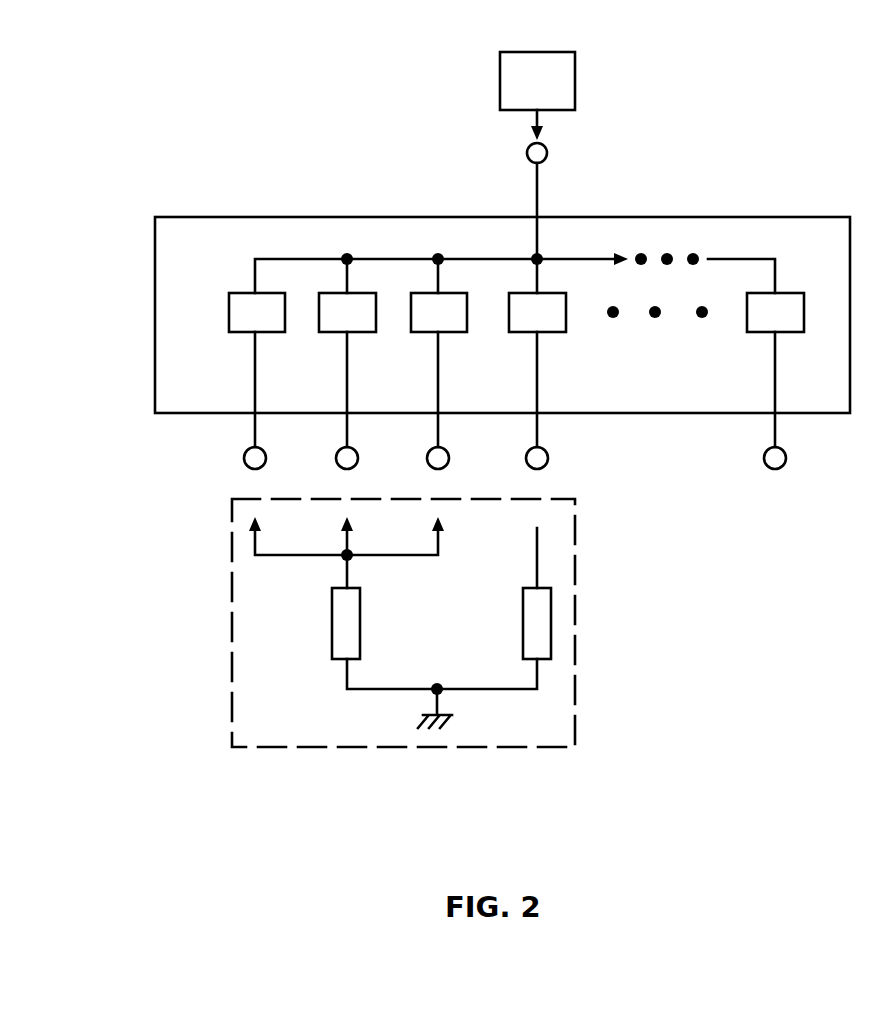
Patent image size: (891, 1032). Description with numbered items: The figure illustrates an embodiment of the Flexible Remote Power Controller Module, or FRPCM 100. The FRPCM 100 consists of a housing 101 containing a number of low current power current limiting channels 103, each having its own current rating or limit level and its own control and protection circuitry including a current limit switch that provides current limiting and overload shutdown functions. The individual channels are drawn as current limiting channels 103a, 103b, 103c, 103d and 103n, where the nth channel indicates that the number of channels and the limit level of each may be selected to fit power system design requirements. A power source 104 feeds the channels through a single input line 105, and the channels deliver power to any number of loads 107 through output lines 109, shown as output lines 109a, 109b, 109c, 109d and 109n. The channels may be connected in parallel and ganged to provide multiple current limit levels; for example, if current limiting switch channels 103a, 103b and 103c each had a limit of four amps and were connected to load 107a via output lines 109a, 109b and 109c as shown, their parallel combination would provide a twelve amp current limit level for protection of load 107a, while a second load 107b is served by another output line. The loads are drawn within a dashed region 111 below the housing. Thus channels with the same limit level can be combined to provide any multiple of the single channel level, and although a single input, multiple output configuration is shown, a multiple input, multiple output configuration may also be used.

The Flexible Remote Power Controller Module 100 is at (333, 217).
The housing 101 is at (713, 217).
The current limiting channels 103 is at (181, 323).
The current limiting switch channel 103a is at (246, 333).
The current limiting switch channel 103b is at (339, 333).
The current limiting switch channel 103c is at (430, 333).
The current limiting channel 103d is at (526, 333).
The current limiting channel 103n is at (766, 333).
The power source 104 is at (575, 75).
The input line 105 is at (538, 190).
The loads 107 is at (271, 645).
The load 107a is at (331, 605).
The load 107b is at (521, 605).
The output lines 109 is at (229, 452).
The output line 109a is at (256, 433).
The output line 109b is at (348, 433).
The output line 109c is at (439, 433).
The output line 109d is at (538, 433).
The output line 109n is at (776, 433).
The external load unit 111 is at (576, 672).